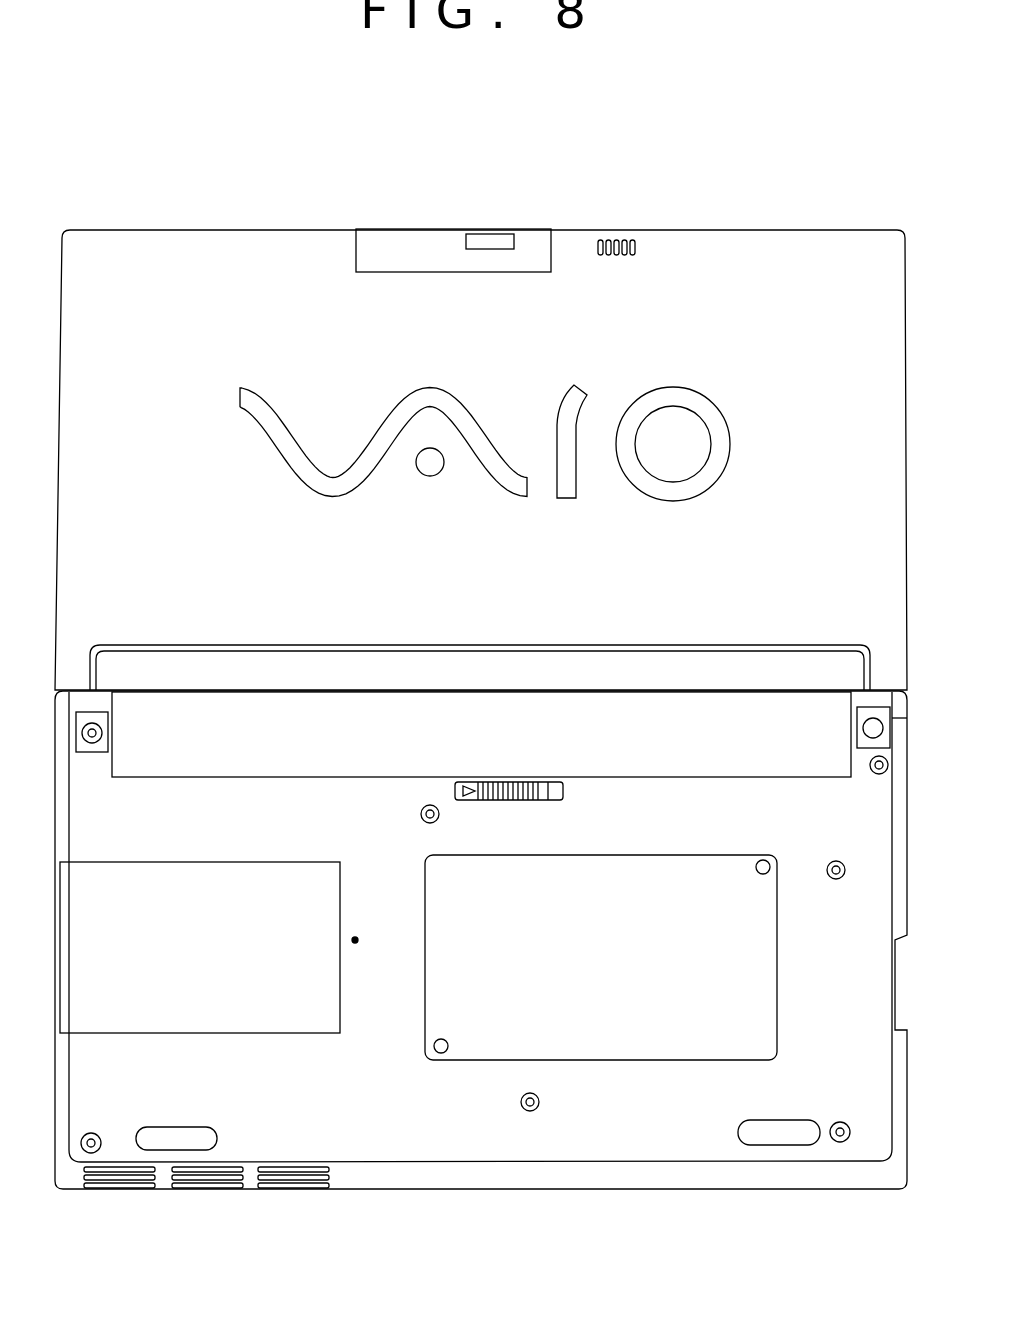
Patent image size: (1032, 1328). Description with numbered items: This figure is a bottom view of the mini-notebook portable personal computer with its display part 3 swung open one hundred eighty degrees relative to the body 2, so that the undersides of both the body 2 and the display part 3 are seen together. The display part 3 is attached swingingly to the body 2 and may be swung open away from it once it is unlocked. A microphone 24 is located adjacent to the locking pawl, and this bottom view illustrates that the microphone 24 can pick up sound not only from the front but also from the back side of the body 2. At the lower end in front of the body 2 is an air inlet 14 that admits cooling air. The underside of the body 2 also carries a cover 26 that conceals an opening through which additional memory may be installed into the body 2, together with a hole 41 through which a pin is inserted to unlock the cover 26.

The body 2 is at (668, 1190).
The display part 3 is at (800, 228).
The air inlet 14 is at (207, 1190).
The microphone 24 is at (614, 238).
The cover 26 is at (250, 1035).
The hole 41 is at (355, 948).